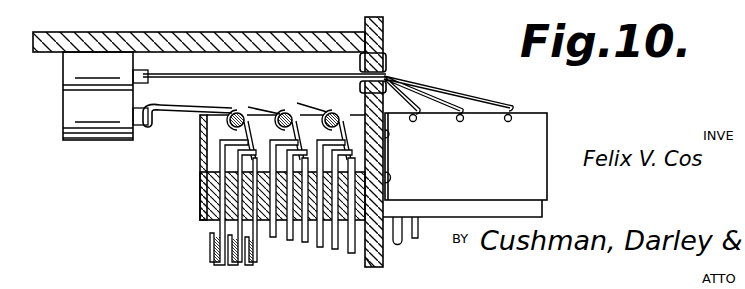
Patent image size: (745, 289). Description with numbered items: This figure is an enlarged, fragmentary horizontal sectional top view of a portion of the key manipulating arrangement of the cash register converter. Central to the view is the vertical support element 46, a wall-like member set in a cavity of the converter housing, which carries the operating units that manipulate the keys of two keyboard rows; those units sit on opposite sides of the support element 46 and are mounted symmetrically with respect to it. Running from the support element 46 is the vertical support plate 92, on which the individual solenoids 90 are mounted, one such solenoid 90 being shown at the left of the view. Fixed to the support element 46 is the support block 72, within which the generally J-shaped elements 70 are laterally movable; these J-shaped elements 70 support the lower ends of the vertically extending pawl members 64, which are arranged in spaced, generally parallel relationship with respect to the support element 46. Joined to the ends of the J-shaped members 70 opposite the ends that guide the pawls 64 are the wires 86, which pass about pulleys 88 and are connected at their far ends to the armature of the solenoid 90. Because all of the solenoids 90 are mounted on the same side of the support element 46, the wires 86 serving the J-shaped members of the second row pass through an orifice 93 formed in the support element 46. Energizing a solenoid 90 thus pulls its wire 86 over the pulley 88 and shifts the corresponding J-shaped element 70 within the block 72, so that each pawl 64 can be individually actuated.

The vertical support plate 92 is at (300, 32).
The vertical support element 46 is at (383, 38).
The orifice 93 is at (383, 70).
The individual solenoid 90 is at (80, 143).
The wire 86 is at (200, 111).
The pulley 88 is at (243, 105).
The support block 72 is at (207, 215).
The pawl member 64 is at (212, 238).
The J-shaped element 70 is at (257, 253).